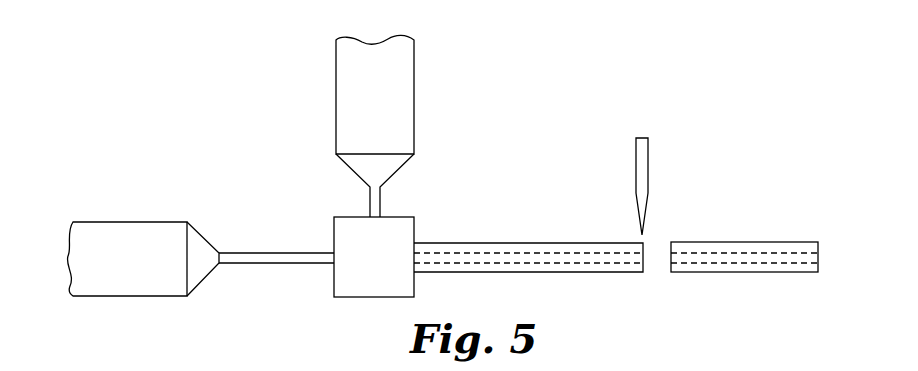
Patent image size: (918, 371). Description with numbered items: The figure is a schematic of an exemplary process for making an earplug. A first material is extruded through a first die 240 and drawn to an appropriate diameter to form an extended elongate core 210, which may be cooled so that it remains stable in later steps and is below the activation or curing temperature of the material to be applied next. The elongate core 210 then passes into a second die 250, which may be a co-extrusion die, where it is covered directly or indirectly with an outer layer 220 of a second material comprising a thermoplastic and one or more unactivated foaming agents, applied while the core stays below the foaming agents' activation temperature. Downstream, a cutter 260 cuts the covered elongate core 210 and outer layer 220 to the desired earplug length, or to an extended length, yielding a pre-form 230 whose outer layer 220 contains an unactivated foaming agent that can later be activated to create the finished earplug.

The elongate core 210 is at (267, 253).
The outer layer 220 is at (503, 243).
The pre-form 230 is at (720, 242).
The first die 240 is at (147, 232).
The second die 250 is at (403, 217).
The cutter 260 is at (641, 140).